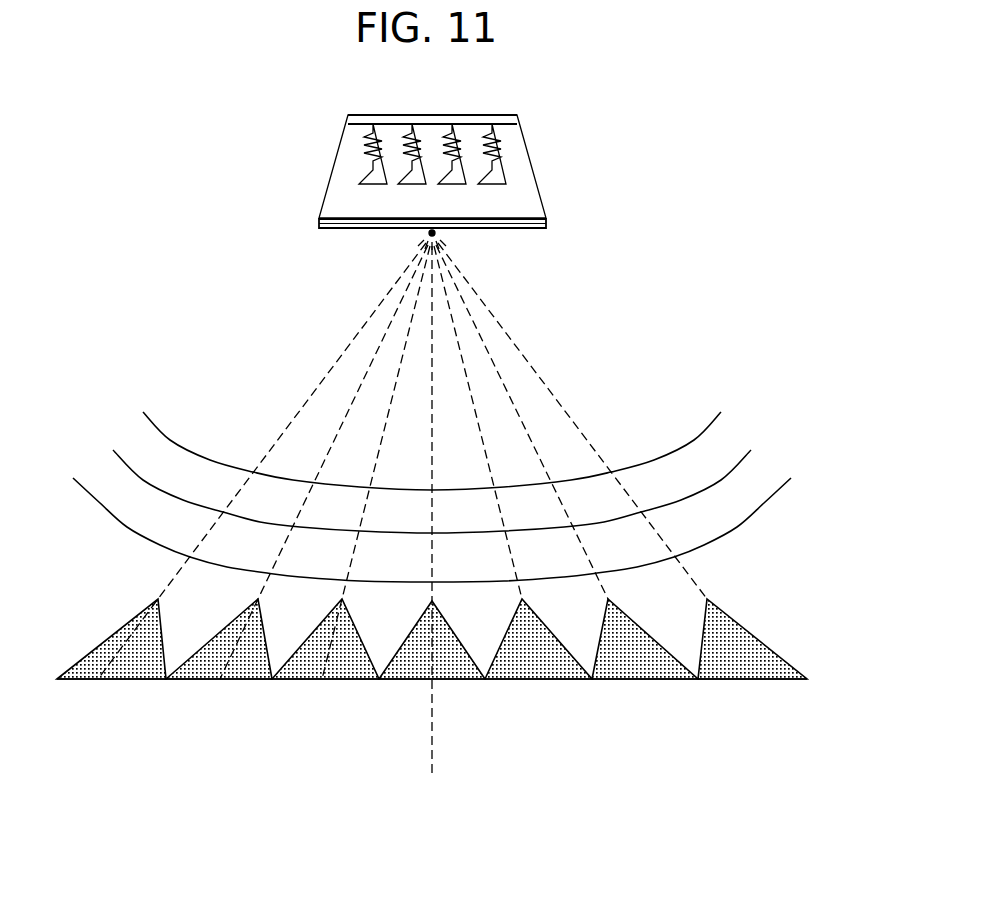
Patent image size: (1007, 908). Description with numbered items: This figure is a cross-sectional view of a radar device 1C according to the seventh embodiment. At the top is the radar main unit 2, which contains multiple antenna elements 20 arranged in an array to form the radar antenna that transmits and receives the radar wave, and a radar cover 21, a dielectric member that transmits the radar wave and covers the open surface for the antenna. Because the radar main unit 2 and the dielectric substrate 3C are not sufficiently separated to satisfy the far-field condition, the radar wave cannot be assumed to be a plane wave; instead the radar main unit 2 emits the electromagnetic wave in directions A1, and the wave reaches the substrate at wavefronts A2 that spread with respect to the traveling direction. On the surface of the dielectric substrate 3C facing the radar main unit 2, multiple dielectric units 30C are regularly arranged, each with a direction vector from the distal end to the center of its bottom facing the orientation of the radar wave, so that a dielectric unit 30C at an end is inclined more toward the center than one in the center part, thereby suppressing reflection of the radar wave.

The radar device 1C is at (695, 263).
The radar main unit 2 is at (325, 196).
The antenna elements 20 is at (358, 183).
The radar cover 21 is at (347, 228).
The directions of radar wave A1 is at (490, 307).
The wavefronts A2 is at (182, 444).
The dielectric substrate 3C is at (448, 667).
The dielectric units 30C is at (740, 667).